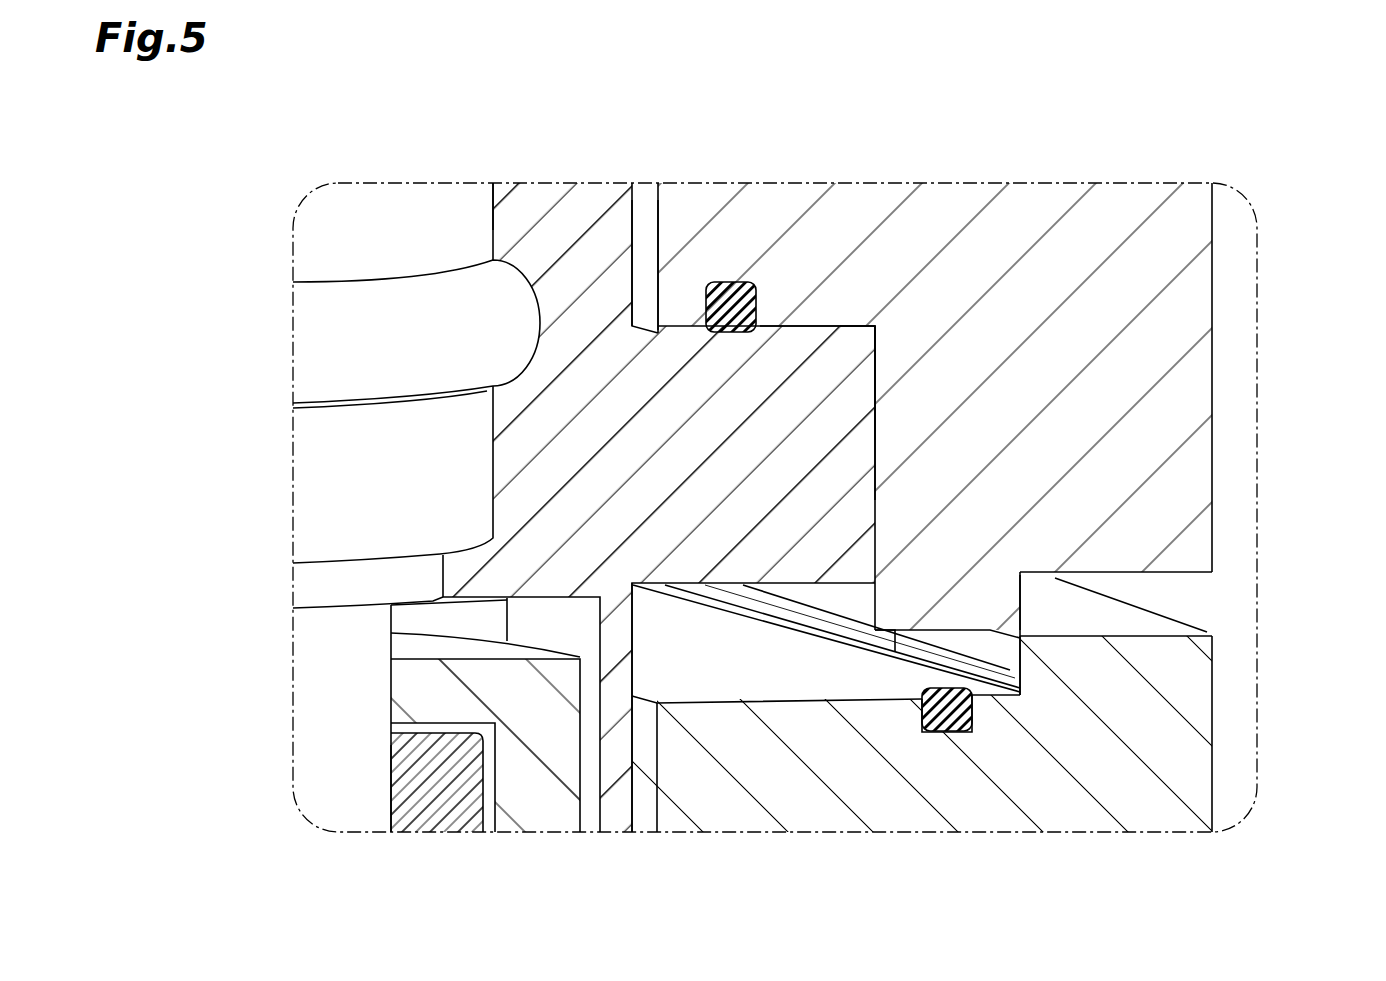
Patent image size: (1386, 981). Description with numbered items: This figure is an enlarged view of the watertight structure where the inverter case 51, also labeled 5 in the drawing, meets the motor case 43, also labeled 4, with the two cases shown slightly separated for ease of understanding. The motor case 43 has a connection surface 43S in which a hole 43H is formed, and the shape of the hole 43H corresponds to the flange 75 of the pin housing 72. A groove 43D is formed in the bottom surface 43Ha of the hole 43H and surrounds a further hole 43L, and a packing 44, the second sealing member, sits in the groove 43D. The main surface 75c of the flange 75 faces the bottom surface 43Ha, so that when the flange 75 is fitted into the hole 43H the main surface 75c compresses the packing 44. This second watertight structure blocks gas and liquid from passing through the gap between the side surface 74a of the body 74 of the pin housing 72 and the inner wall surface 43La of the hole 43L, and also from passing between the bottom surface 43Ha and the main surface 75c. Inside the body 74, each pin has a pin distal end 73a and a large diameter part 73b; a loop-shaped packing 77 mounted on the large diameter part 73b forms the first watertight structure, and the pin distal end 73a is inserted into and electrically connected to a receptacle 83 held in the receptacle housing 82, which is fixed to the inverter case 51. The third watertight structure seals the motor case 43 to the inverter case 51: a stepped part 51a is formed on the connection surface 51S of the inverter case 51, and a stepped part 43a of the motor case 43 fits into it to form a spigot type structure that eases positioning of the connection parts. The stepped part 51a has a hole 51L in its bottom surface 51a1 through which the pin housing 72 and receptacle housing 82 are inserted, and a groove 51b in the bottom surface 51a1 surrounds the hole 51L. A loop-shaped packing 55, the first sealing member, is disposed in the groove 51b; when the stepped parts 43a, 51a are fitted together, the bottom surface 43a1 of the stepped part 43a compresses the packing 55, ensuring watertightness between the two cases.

The housing 4 is at (1018, 439).
The motor case 43 is at (1213, 350).
The connection surface 43S is at (1197, 575).
The stepped part 43a is at (1022, 597).
The bottom surface 43a1 is at (912, 683).
The groove 43D is at (735, 282).
The hole 43L is at (691, 205).
The inner wall surface 43La is at (657, 280).
The hole 43H is at (942, 259).
The bottom surface 43Ha is at (870, 358).
The packing 44 is at (745, 355).
The body 74 is at (657, 477).
The side surface 74a is at (640, 268).
The flange 75 is at (880, 428).
The main surface 75c is at (870, 355).
The pin housing 72 is at (700, 878).
The packing 77 is at (320, 338).
The receptacle housing 82 is at (585, 805).
The receptacle 83 is at (487, 807).
The pin distal end 73a is at (413, 800).
The large diameter part 73b is at (510, 217).
The cover 5 is at (1005, 705).
The inverter case 51 is at (1213, 720).
The connection surface 51S is at (1103, 636).
The stepped part 51a is at (1018, 665).
The bottom surface 51a1 is at (810, 695).
The hole 51L is at (655, 767).
The groove 51b is at (940, 733).
The packing 55 is at (893, 640).